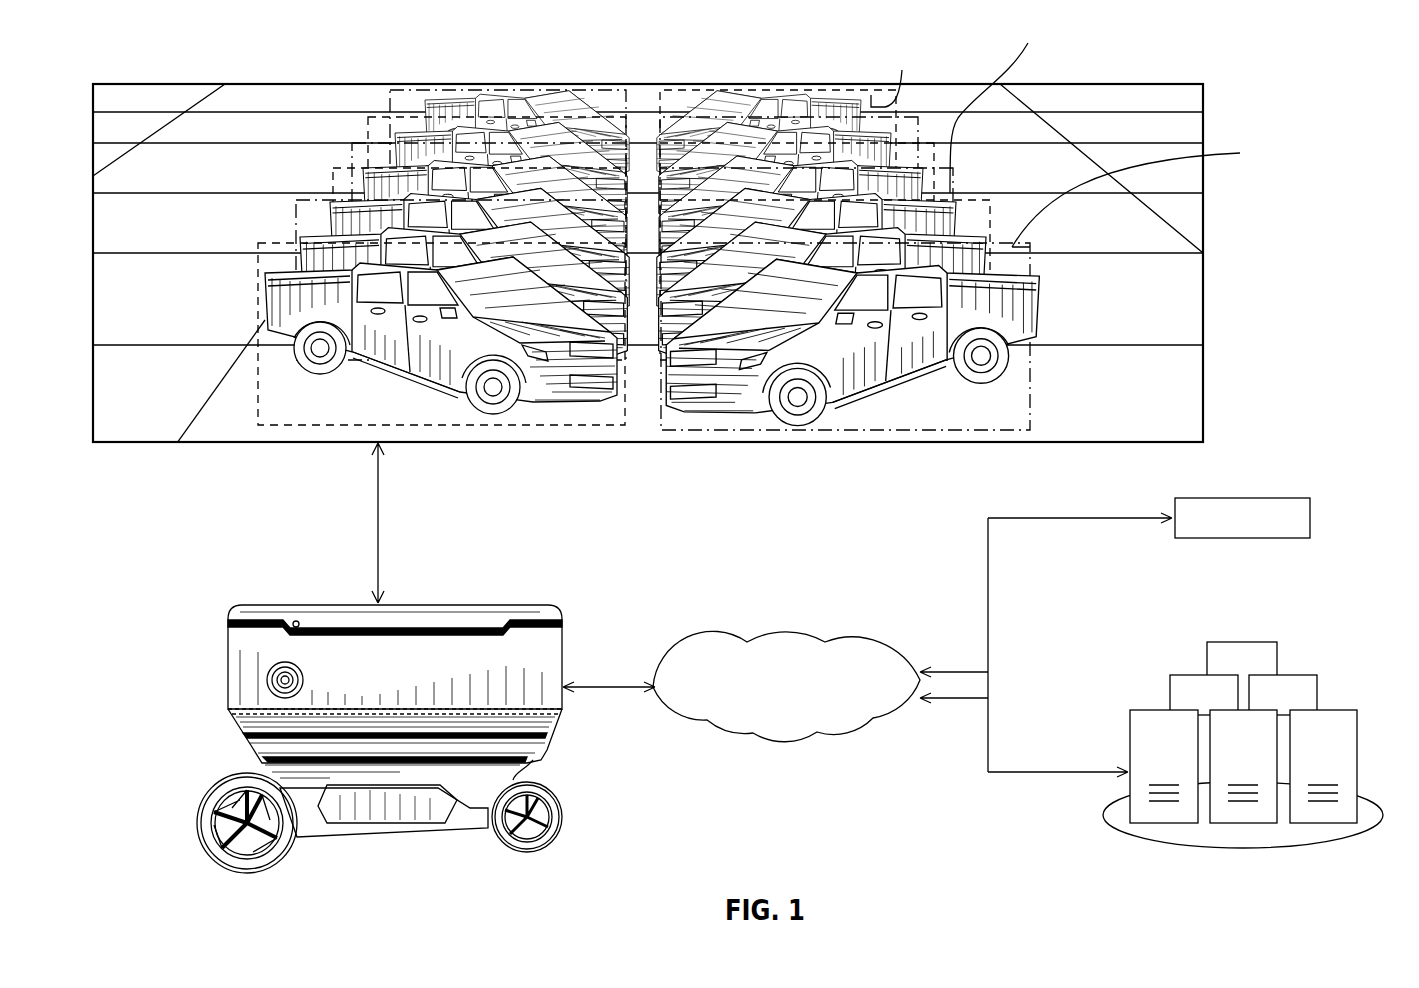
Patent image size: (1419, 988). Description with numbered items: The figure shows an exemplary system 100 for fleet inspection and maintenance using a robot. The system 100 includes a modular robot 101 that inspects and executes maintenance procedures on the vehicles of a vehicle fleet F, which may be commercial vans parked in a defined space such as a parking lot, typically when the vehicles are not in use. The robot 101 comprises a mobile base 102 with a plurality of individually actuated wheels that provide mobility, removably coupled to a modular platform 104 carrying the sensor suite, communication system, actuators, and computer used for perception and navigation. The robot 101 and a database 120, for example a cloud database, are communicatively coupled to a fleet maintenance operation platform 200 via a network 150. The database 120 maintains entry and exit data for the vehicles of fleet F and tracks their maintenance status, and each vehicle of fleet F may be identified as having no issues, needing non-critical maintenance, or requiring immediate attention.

The system for fleet inspection and maintenance 100 is at (744, 248).
The modular robot 101 is at (380, 713).
The mobile base 102 is at (263, 767).
The modular platform 104 is at (420, 652).
The database 120 is at (1215, 497).
The network 150 is at (780, 630).
The fleet maintenance operation platform 200 is at (1303, 675).
The vehicle fleet F is at (288, 325).